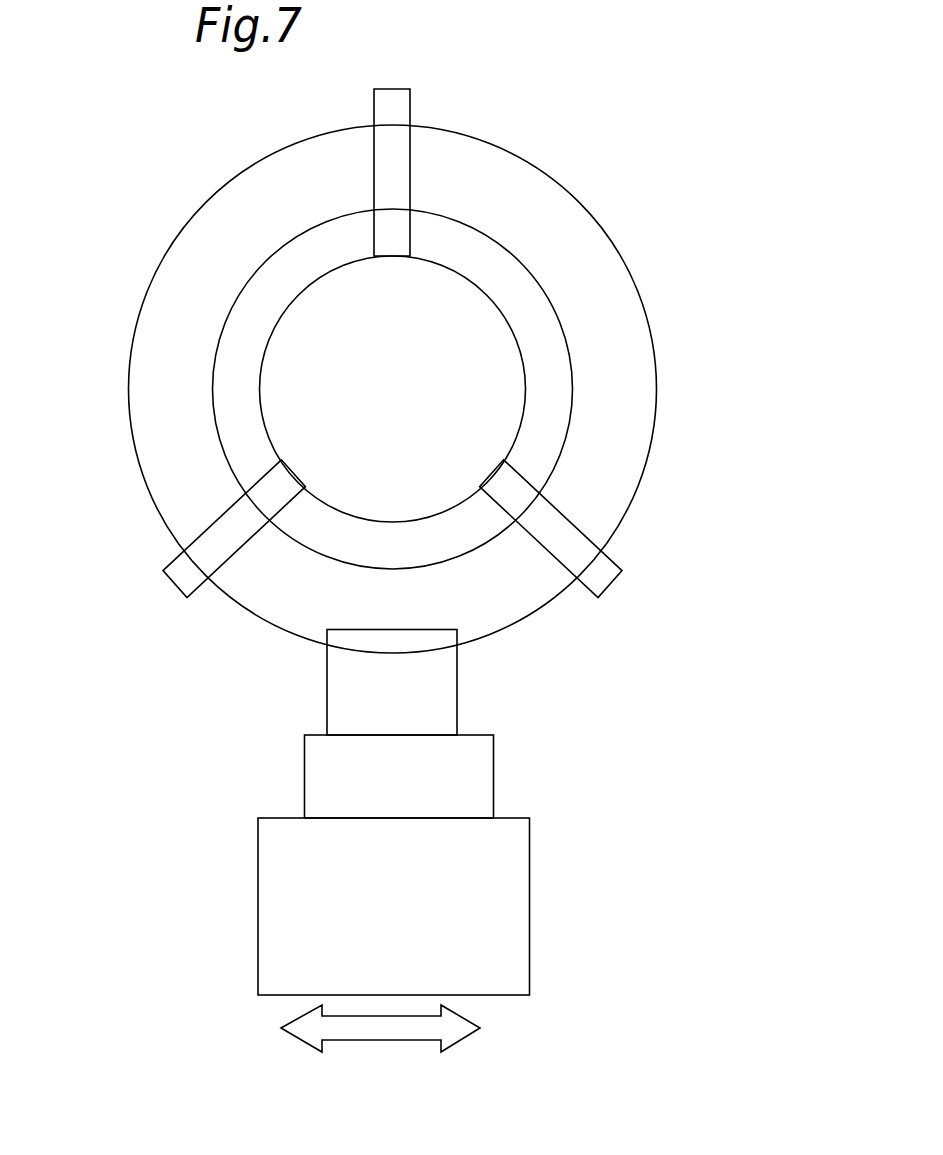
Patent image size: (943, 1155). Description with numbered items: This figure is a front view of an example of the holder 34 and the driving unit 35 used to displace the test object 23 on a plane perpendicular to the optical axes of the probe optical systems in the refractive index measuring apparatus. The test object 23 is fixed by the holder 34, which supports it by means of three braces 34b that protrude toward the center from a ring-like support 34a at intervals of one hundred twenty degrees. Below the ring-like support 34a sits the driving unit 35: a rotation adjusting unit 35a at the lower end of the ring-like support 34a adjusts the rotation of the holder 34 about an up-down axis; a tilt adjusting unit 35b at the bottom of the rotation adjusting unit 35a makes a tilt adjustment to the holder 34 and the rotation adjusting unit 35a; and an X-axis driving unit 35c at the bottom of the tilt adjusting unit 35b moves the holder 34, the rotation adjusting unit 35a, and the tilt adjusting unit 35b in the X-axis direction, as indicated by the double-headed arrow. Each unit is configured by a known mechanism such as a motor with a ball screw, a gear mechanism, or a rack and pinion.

The test object 23 is at (483, 372).
The holder 34 is at (398, 340).
The ring-like support 34a is at (584, 205).
The braces 34b is at (393, 154).
The driving unit 35 is at (372, 841).
The rotation adjusting unit 35a is at (443, 689).
The tilt adjusting unit 35b is at (473, 773).
The X-axis driving unit 35c is at (503, 890).